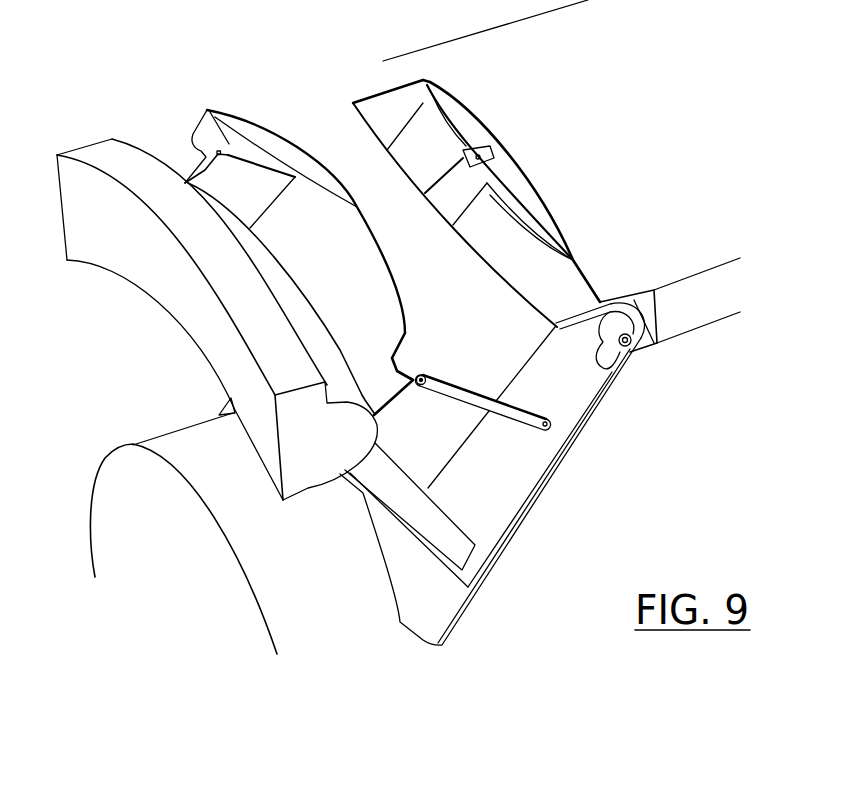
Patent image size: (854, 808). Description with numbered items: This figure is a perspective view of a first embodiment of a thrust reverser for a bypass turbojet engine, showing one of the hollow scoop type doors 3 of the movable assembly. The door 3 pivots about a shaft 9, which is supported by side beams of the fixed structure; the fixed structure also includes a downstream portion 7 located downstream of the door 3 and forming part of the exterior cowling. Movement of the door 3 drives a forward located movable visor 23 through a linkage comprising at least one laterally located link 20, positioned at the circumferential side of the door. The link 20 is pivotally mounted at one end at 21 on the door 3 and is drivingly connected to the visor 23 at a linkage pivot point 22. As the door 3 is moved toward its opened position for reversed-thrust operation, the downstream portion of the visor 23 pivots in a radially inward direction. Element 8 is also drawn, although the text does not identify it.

The first fin / blade 8 is at (97, 153).
The movable visor 23 is at (257, 128).
The scoop door 3 is at (345, 132).
The downstream portion 7 is at (561, 176).
The linkage pivot point 22 is at (422, 375).
The pivot mounting of link on door 21 is at (549, 430).
The laterally located link 20 is at (513, 421).
The shaft 9 is at (630, 353).